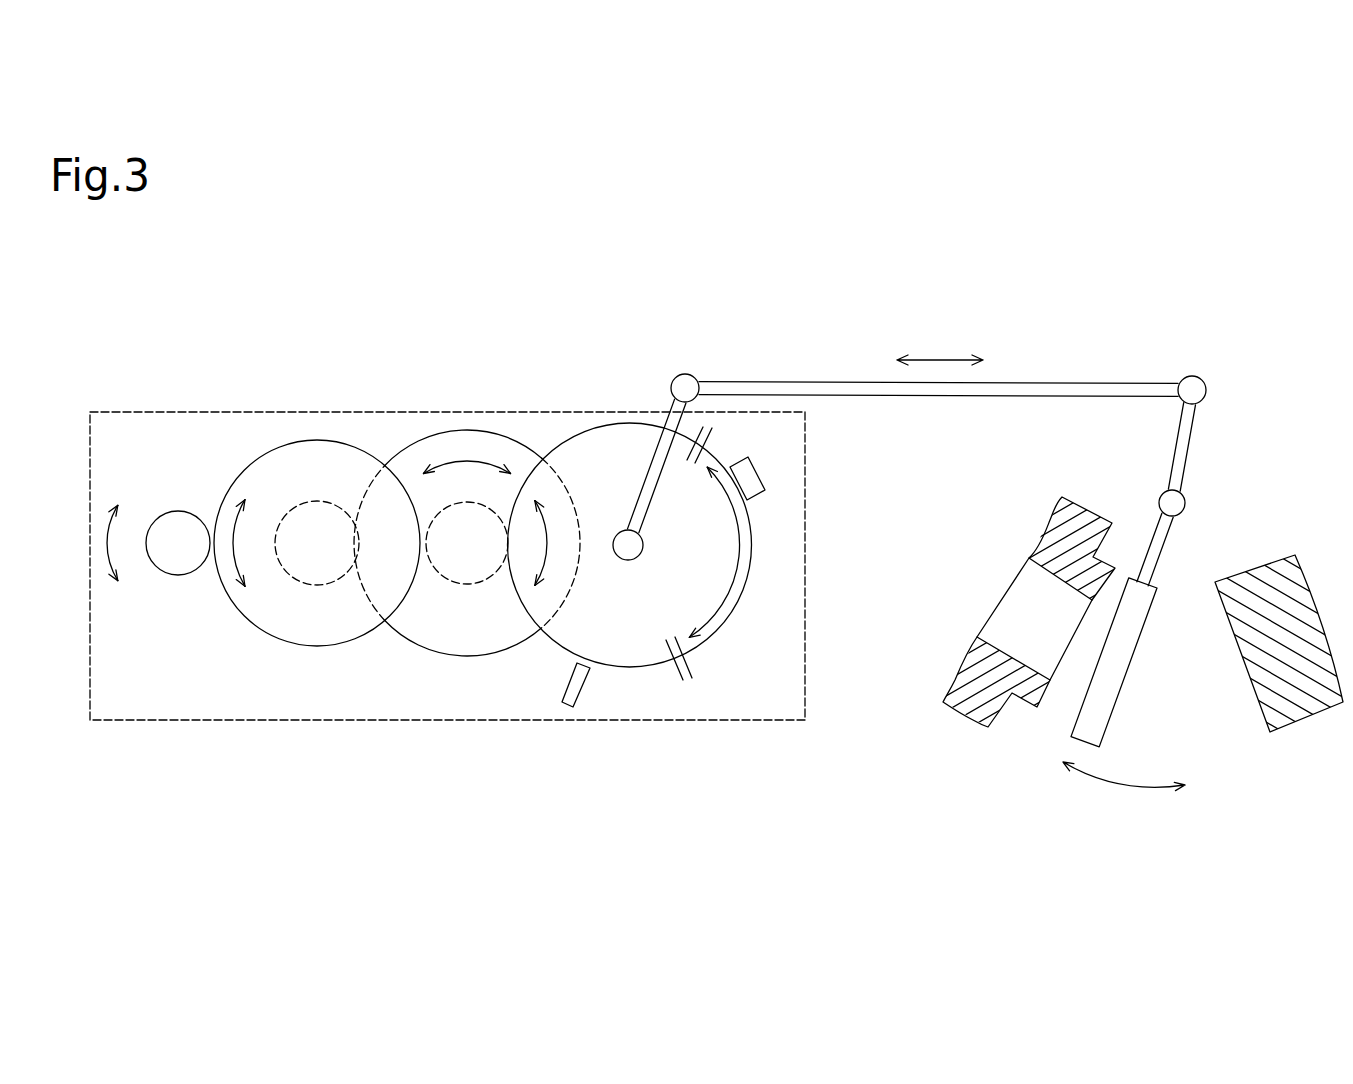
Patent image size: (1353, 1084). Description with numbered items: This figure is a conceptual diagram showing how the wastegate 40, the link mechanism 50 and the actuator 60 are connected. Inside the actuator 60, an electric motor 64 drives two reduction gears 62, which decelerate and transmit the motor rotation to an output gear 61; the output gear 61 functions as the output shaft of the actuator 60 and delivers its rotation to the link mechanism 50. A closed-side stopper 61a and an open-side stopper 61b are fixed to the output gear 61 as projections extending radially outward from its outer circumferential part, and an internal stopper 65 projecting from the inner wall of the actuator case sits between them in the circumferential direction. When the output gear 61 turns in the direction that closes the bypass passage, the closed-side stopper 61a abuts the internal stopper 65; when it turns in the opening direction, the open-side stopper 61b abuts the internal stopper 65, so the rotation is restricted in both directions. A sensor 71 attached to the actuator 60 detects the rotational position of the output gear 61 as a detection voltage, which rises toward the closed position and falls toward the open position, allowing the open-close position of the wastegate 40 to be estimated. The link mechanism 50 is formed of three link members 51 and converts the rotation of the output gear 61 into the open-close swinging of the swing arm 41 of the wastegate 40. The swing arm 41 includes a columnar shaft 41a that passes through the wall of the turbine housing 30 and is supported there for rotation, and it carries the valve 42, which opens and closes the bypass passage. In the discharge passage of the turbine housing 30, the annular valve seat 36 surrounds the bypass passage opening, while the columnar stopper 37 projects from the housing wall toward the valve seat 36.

The turbine housing 30 is at (1123, 645).
The valve seat 36 is at (1052, 700).
The stopper 37 is at (1260, 730).
The wastegate 40 is at (1148, 630).
The swing arm 41 is at (1235, 515).
The shaft 41a is at (1186, 509).
The valve 42 is at (1122, 696).
The link mechanism 50 is at (812, 381).
The link member 51 is at (1070, 381).
The actuator 60 is at (152, 721).
The output gear 61 is at (557, 646).
The closed-side stopper 61a is at (714, 437).
The open-side stopper 61b is at (689, 667).
The reduction gears 62 is at (408, 647).
The electric motor 64 is at (162, 574).
The internal stopper 65 is at (758, 498).
The sensor 71 is at (586, 688).